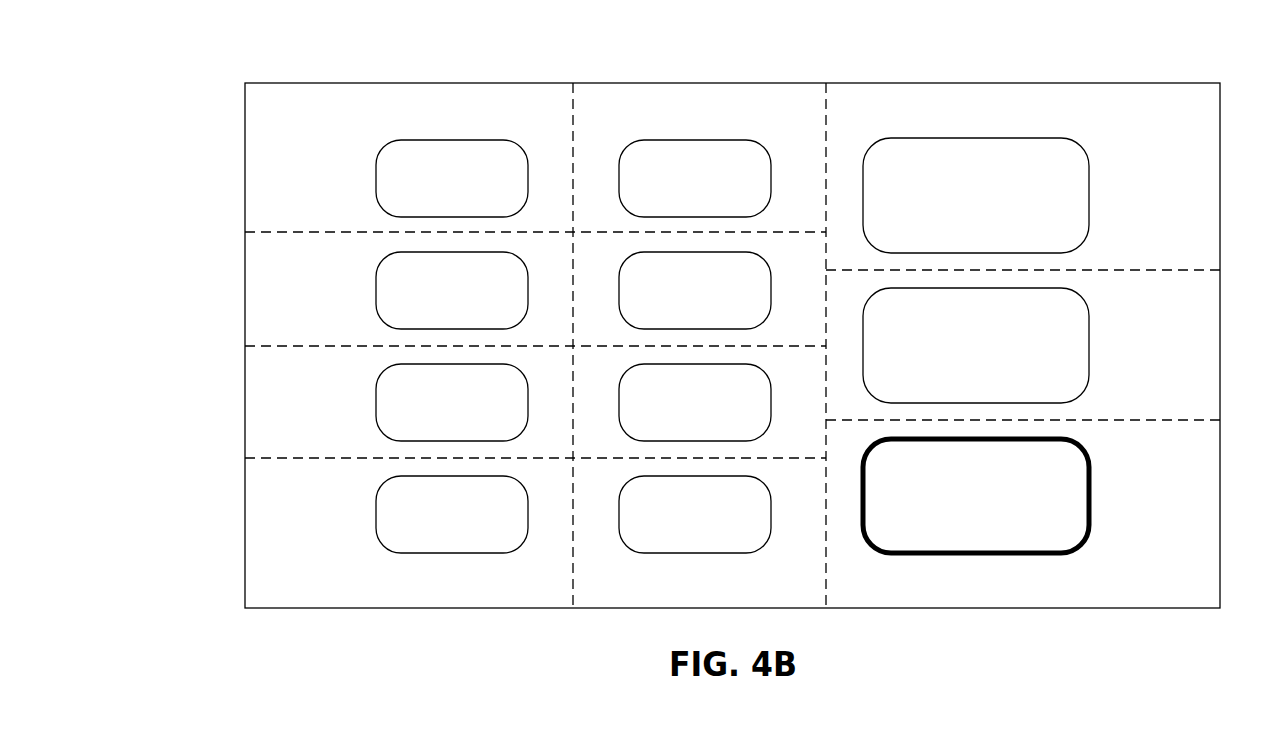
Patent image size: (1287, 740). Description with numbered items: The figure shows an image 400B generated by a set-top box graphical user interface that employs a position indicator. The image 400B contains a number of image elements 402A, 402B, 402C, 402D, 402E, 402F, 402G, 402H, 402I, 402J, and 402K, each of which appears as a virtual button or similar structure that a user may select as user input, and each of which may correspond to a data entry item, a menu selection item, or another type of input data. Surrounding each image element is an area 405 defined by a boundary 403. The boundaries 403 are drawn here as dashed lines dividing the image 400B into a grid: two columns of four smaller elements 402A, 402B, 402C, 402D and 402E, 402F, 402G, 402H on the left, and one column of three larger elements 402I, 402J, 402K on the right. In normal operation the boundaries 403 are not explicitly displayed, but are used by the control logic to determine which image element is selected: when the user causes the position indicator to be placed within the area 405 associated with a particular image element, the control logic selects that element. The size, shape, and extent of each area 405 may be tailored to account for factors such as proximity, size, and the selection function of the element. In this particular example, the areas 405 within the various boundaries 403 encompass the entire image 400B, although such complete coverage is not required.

The image 400B is at (1107, 83).
The image element 402A is at (442, 177).
The image element 402B is at (442, 289).
The image element 402C is at (442, 401).
The image element 402D is at (442, 513).
The image element 402E is at (685, 177).
The image element 402F is at (685, 289).
The image element 402G is at (685, 401).
The image element 402H is at (685, 513).
The image element 402I is at (920, 176).
The image element 402J is at (924, 325).
The image element 402K is at (930, 475).
The boundary 403 is at (826, 130).
The area 405 is at (302, 534).